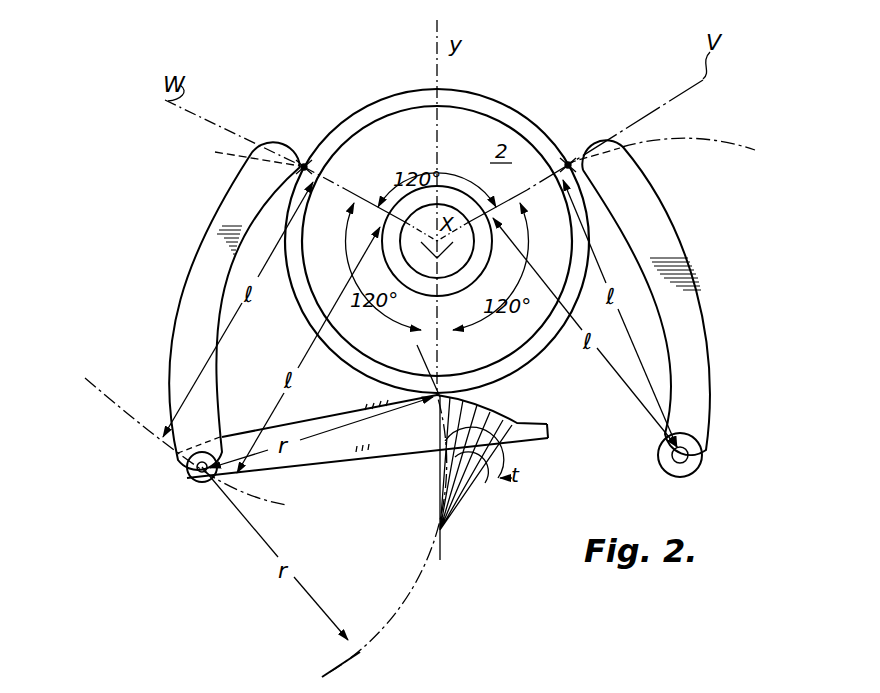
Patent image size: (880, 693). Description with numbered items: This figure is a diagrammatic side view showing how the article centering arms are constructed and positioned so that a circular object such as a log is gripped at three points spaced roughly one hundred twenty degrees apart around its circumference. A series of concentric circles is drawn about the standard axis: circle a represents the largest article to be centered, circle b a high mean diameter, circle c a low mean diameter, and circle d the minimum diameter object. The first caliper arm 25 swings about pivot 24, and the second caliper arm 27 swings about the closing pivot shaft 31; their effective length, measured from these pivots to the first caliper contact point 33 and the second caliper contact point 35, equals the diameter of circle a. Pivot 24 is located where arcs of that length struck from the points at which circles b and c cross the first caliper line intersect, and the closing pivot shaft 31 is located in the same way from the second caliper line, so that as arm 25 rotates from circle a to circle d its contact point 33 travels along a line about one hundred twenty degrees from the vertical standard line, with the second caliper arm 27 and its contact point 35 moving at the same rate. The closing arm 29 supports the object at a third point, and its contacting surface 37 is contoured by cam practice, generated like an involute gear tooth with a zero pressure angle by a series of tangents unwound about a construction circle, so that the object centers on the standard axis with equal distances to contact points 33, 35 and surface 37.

The pivot 24 is at (702, 452).
The first caliper arm 25 is at (695, 297).
The second caliper arm 27 is at (190, 305).
The closing arm 29 is at (351, 461).
The closing pivot shaft 31 is at (188, 472).
The first caliper contact point 33 is at (568, 163).
The second caliper contact point 35 is at (304, 165).
The contacting surface 37 is at (492, 403).
The circle a is at (337, 121).
The circle b is at (380, 118).
The circle c is at (427, 186).
The circle d is at (447, 204).